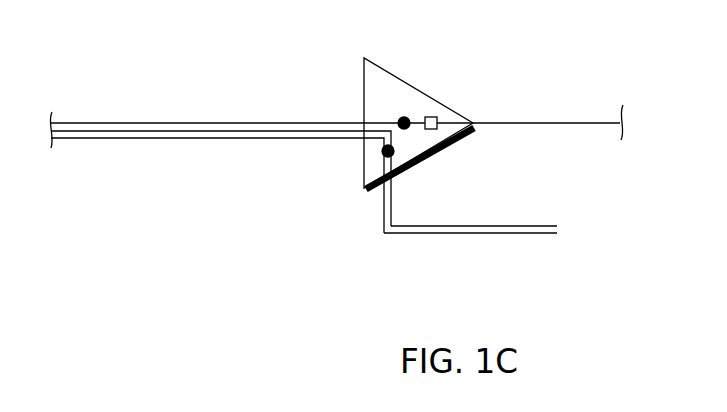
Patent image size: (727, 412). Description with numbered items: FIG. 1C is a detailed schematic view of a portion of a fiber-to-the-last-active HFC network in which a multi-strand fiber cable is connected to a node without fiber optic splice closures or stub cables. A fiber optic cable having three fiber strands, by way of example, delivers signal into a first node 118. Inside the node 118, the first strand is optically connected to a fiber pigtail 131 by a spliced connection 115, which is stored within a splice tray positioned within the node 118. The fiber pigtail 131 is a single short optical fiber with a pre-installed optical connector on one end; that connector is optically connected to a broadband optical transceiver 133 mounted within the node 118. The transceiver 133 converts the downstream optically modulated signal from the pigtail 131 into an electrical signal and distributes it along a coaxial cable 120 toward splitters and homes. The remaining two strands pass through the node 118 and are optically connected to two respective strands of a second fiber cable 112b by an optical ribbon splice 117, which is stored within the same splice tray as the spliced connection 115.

The second fiber cable 112b is at (463, 234).
The spliced connection 115 is at (404, 118).
The optical ribbon splice 117 is at (382, 151).
The first node 118 is at (406, 83).
The coaxial cable 120 is at (572, 124).
The fiber pigtail 131 is at (431, 130).
The broadband optical transceiver 133 is at (452, 138).